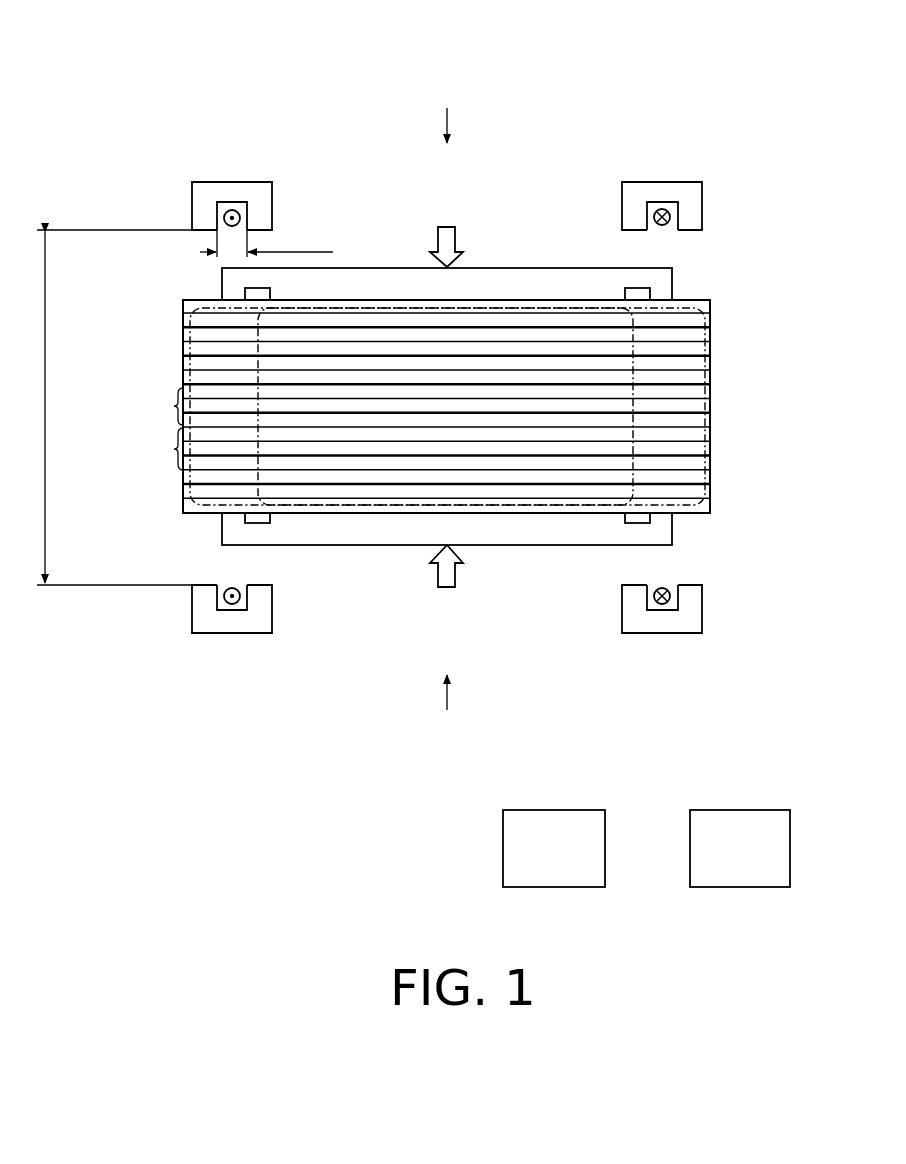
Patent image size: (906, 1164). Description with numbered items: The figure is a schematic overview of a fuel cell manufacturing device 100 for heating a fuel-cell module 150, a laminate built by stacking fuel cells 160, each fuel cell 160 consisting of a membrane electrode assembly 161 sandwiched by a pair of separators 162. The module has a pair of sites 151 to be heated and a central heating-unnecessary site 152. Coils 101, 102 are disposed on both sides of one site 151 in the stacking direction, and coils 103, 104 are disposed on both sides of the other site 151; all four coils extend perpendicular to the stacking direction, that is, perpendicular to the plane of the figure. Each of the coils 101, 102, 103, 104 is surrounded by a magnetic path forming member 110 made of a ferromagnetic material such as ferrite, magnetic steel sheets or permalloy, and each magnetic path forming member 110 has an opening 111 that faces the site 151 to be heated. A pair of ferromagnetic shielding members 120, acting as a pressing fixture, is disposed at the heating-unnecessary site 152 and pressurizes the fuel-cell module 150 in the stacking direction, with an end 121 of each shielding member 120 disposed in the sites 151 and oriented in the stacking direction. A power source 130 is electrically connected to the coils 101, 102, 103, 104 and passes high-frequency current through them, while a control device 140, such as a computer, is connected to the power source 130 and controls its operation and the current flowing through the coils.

The fuel cell manufacturing device 100 is at (136, 41).
The coil 101 is at (218, 203).
The coil 102 is at (218, 611).
The coil 103 is at (678, 210).
The coil 104 is at (679, 612).
The magnetic path forming member 110 is at (236, 196).
The opening 111 is at (242, 217).
The shielding member 120 is at (506, 276).
The end 121 is at (236, 297).
The power source 130 is at (548, 822).
The control device 140 is at (738, 822).
The fuel-cell module 150 is at (439, 406).
The site to be heated 151 is at (708, 318).
The heating-unnecessary site 152 is at (392, 508).
The fuel cell 160 is at (158, 429).
The membrane electrode assembly 161 is at (708, 406).
The separator 162 is at (706, 396).